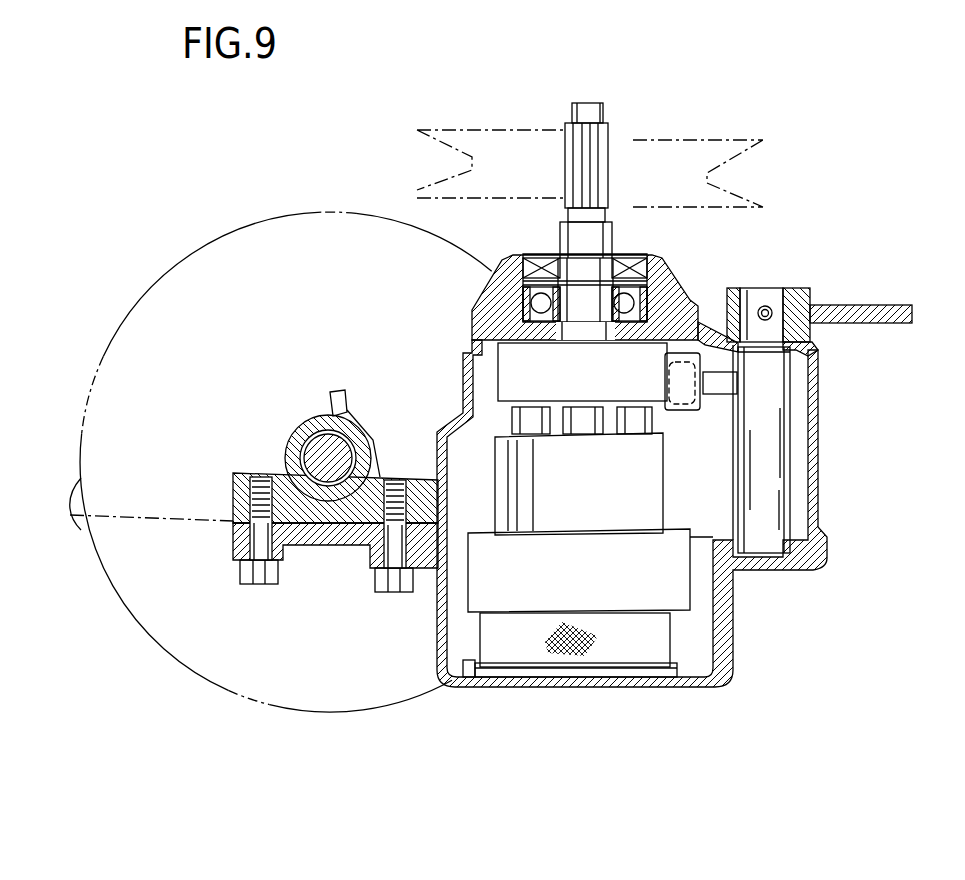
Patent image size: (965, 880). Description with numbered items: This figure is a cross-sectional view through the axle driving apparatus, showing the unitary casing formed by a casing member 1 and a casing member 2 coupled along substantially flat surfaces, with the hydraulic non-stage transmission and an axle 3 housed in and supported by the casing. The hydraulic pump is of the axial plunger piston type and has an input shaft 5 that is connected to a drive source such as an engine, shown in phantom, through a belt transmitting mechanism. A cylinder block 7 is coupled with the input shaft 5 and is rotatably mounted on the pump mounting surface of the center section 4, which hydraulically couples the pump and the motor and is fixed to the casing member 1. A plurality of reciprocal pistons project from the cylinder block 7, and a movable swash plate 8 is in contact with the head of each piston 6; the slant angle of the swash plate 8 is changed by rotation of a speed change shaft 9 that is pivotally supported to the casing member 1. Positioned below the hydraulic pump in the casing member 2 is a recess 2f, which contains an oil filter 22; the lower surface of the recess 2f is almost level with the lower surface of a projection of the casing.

The casing member 1 is at (383, 212).
The casing member 2 is at (826, 560).
The recess 2f is at (532, 688).
The axle 3 is at (300, 420).
The center section 4 is at (688, 604).
The input shaft 5 is at (563, 128).
The piston 6 is at (657, 410).
The cylinder block 7 is at (604, 520).
The movable swash plate 8 is at (624, 374).
The speed change shaft 9 is at (785, 444).
The oil filter 22 is at (633, 657).